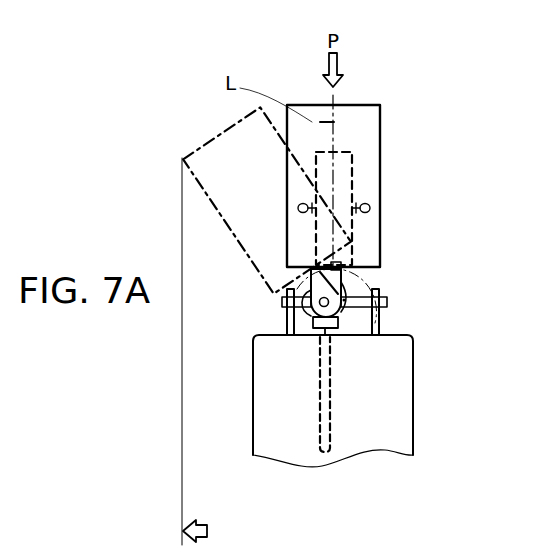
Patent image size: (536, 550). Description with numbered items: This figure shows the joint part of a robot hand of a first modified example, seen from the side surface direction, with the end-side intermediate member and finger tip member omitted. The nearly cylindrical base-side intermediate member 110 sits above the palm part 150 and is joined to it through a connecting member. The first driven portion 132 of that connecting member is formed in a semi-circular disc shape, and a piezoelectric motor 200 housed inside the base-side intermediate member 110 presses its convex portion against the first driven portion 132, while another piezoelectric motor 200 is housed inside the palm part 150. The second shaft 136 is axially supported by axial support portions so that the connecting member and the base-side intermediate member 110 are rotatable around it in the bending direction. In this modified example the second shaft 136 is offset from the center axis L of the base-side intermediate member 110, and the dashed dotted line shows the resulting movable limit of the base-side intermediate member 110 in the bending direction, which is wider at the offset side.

The base-side intermediate member 110 is at (381, 150).
The piezoelectric motor 200 is at (352, 187).
The first driven portion 132 is at (343, 286).
The second shaft 136 is at (343, 308).
The palm part 150 is at (414, 400).